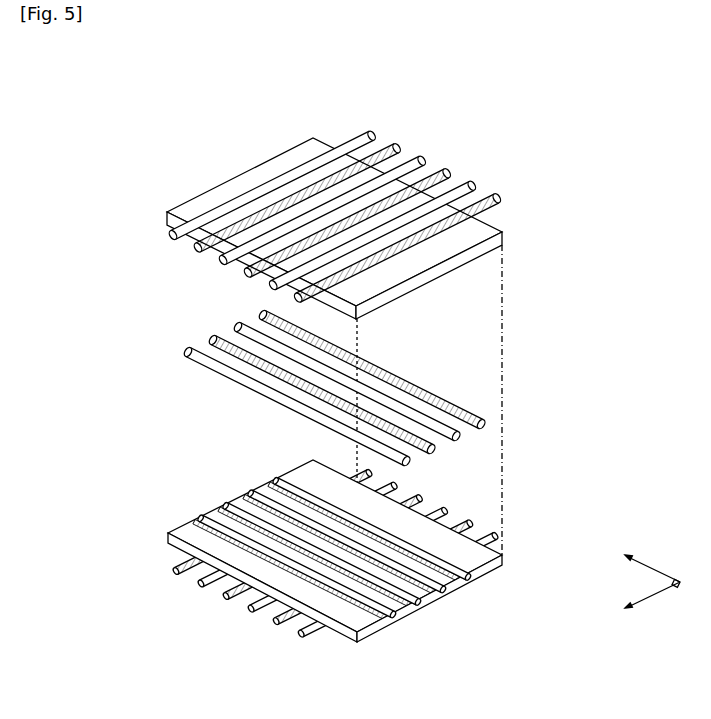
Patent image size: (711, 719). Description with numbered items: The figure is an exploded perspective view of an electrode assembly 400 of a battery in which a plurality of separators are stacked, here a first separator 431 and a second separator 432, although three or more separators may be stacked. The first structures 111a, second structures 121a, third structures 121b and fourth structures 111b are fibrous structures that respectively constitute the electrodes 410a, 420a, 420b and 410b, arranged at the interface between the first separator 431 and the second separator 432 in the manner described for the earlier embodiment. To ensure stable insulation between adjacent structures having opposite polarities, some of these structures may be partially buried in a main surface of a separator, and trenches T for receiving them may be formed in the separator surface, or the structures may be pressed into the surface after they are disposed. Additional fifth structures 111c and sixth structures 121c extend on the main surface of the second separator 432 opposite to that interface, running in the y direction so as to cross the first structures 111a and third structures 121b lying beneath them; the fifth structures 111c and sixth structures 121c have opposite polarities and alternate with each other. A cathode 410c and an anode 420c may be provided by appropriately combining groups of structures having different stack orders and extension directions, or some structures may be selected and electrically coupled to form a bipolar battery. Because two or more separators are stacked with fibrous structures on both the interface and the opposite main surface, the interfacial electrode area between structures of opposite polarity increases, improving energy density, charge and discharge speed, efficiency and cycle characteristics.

The electrode assembly 400 is at (550, 92).
The second separator 432 is at (503, 239).
The first separator 431 is at (466, 584).
The cathode 410c is at (259, 216).
The electrode 410a is at (251, 393).
The electrode 410b is at (413, 559).
The anode 420c is at (360, 186).
The electrode 420b is at (418, 390).
The electrode 420a is at (280, 588).
The fifth structures 111c is at (171, 237).
The first structures 111a is at (236, 326).
The fourth structures 111b is at (400, 486).
The sixth structures 121c is at (528, 141).
The third structures 121b is at (448, 405).
The second structures 121a is at (173, 571).
The trenches T is at (203, 517).